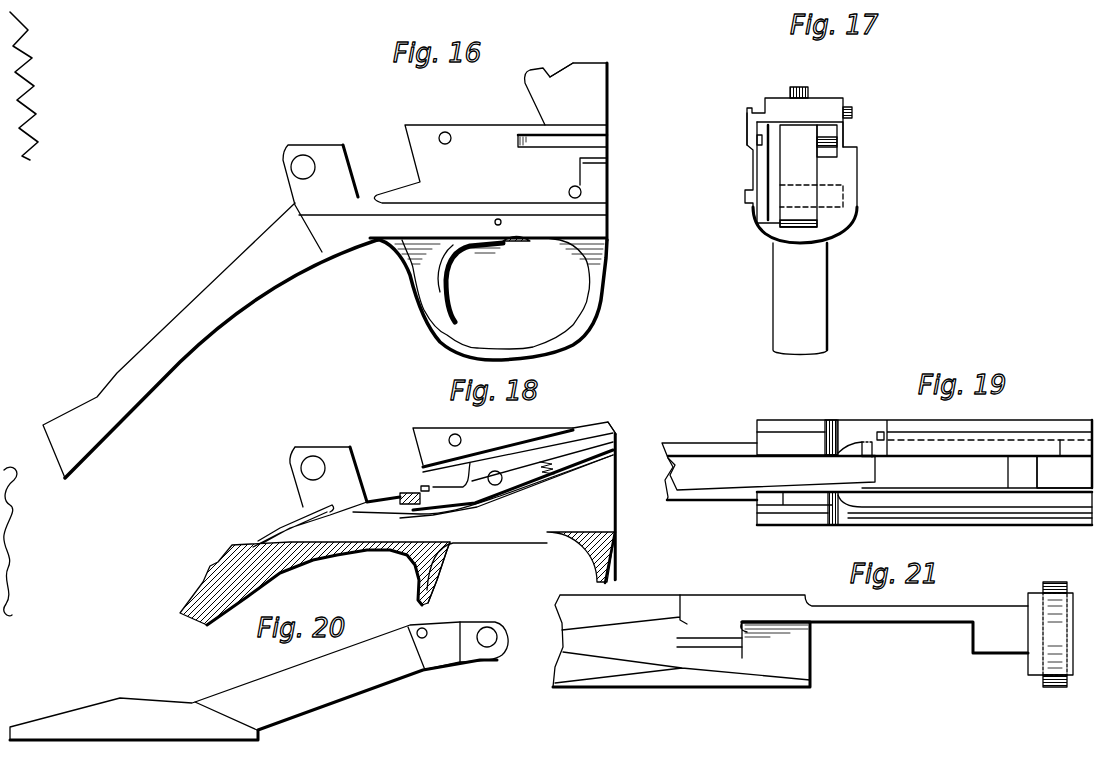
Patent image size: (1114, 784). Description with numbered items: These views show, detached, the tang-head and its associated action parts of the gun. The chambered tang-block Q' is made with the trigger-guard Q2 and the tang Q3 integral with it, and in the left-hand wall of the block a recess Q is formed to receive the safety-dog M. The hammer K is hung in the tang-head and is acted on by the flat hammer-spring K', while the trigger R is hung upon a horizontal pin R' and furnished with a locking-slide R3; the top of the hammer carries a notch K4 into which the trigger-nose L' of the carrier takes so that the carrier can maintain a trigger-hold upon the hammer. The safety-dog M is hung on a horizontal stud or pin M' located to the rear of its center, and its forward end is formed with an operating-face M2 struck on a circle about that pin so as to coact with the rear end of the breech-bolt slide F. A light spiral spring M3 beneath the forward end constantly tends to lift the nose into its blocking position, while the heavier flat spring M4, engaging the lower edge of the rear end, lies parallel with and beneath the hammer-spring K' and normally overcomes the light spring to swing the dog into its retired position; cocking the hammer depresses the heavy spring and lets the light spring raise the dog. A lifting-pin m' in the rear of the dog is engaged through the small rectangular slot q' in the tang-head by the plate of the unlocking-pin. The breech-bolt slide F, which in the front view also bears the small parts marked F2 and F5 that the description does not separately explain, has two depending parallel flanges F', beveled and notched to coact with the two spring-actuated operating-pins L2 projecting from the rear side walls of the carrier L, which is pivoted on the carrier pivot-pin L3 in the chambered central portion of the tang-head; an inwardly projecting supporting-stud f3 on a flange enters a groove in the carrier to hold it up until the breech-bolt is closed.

In FIG. 16, the hammer K is at (562, 105).
In FIG. 17, the hammer K is at (792, 176).
In FIG. 19, the hammer K is at (1064, 472).
In FIG. 16, the notch in top of hammer K4 is at (554, 64).
In FIG. 18, the hammer-spring K' is at (308, 519).
In FIG. 18, the recess Q is at (483, 455).
In FIG. 16, the tang-block (tang-head) Q' is at (445, 163).
In FIG. 17, the tang-block (tang-head) Q' is at (787, 182).
In FIG. 19, the tang-block (tang-head) Q' is at (797, 421).
In FIG. 16, the trigger-guard Q2 is at (477, 354).
In FIG. 17, the trigger-guard Q2 is at (826, 257).
In FIG. 18, the trigger-guard Q2 is at (413, 590).
In FIG. 16, the tang Q3 is at (210, 340).
In FIG. 18, the tang Q3 is at (192, 601).
In FIG. 19, the tang Q3 is at (695, 448).
In FIG. 18, the rectangular slot q' is at (408, 484).
In FIG. 19, the rectangular slot q' is at (858, 424).
In FIG. 16, the trigger R is at (470, 282).
In FIG. 16, the trigger pin R' is at (504, 202).
In FIG. 16, the locking-slide R3 is at (517, 248).
In FIG. 17, the breech-bolt slide F is at (801, 135).
In FIG. 17, the screw F2 is at (798, 87).
In FIG. 17, the screw F5 is at (853, 110).
In FIG. 17, the flange of breech-bolt slide F' is at (805, 147).
In FIG. 17, the supporting-stud f3 is at (757, 140).
In FIG. 18, the safety-dog M is at (508, 486).
In FIG. 19, the safety-dog M is at (965, 454).
In FIG. 18, the safety-dog stud or pin M' is at (493, 499).
In FIG. 17, the operating-face M2 is at (828, 131).
In FIG. 18, the operating-face M2 is at (618, 426).
In FIG. 18, the light safety-dog spring M3 is at (550, 474).
In FIG. 18, the heavy safety-dog spring M4 is at (366, 500).
In FIG. 19, the heavy safety-dog spring M4 is at (771, 473).
In FIG. 18, the lifting-pin m' is at (435, 478).
In FIG. 19, the lifting-pin m' is at (886, 416).
In FIG. 20, the cartridge-carrier L is at (259, 681).
In FIG. 21, the cartridge-carrier L is at (790, 652).
In FIG. 20, the trigger-nose L' is at (428, 661).
In FIG. 21, the operating-pins L2 is at (1048, 583).
In FIG. 20, the carrier pivot-pin L3 is at (426, 631).